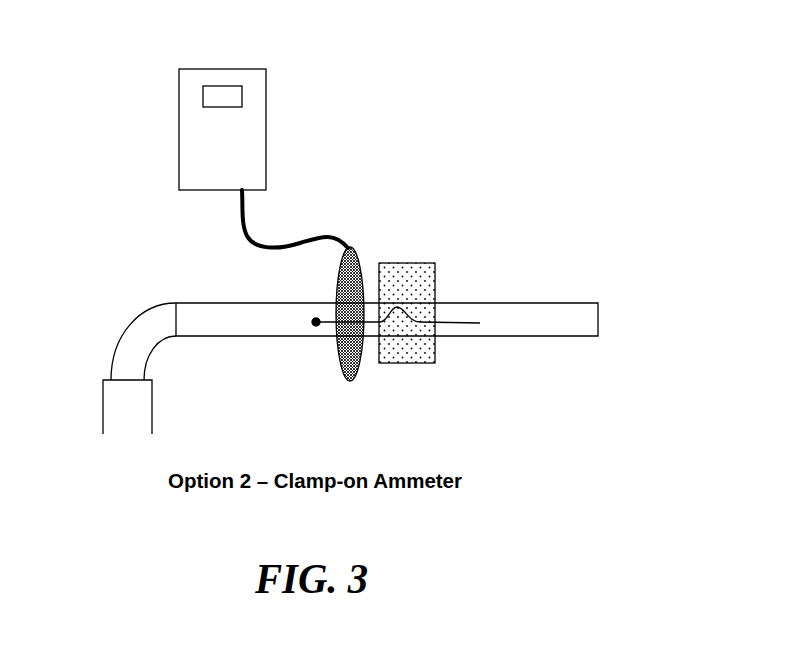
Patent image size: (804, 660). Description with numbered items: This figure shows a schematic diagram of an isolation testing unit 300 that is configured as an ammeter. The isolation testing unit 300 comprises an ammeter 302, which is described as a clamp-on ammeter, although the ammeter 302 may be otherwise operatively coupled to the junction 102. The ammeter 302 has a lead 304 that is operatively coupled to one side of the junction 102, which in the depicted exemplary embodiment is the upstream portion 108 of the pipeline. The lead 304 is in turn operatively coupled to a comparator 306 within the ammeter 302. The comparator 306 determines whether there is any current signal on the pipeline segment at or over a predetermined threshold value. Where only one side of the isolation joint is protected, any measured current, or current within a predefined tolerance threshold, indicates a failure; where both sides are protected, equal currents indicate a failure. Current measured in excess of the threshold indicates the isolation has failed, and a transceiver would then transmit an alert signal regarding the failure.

The isolation testing unit 300 is at (480, 61).
The ammeter 302 is at (178, 122).
The comparator 306 is at (222, 86).
The lead 304 is at (245, 222).
The upstream portion 108 is at (117, 347).
The junction 102 is at (436, 278).